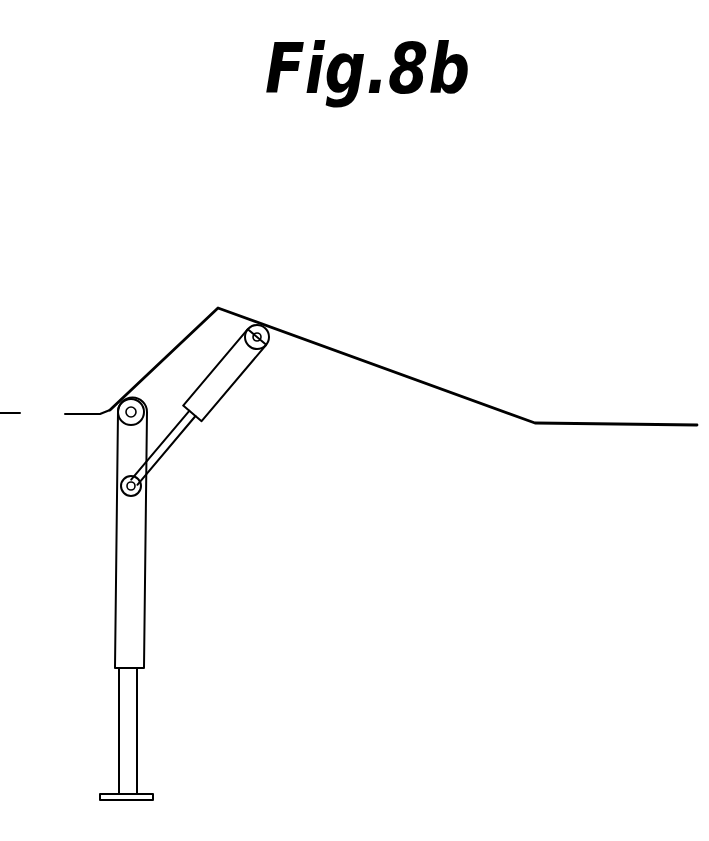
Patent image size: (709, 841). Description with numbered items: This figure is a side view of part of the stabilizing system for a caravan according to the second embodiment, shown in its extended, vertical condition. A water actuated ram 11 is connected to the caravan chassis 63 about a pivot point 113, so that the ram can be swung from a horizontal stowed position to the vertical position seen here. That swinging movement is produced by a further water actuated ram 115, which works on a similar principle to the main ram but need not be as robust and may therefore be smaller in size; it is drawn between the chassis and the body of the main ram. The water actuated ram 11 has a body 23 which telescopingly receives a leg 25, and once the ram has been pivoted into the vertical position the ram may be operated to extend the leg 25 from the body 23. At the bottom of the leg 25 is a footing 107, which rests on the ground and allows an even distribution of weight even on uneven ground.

The water actuated ram 11 is at (204, 619).
The body 23 is at (146, 618).
The leg 25 is at (137, 728).
The caravan chassis 63 is at (90, 416).
The footing 107 is at (145, 801).
The pivot point 113 is at (128, 404).
The further water actuated ram 115 is at (244, 405).